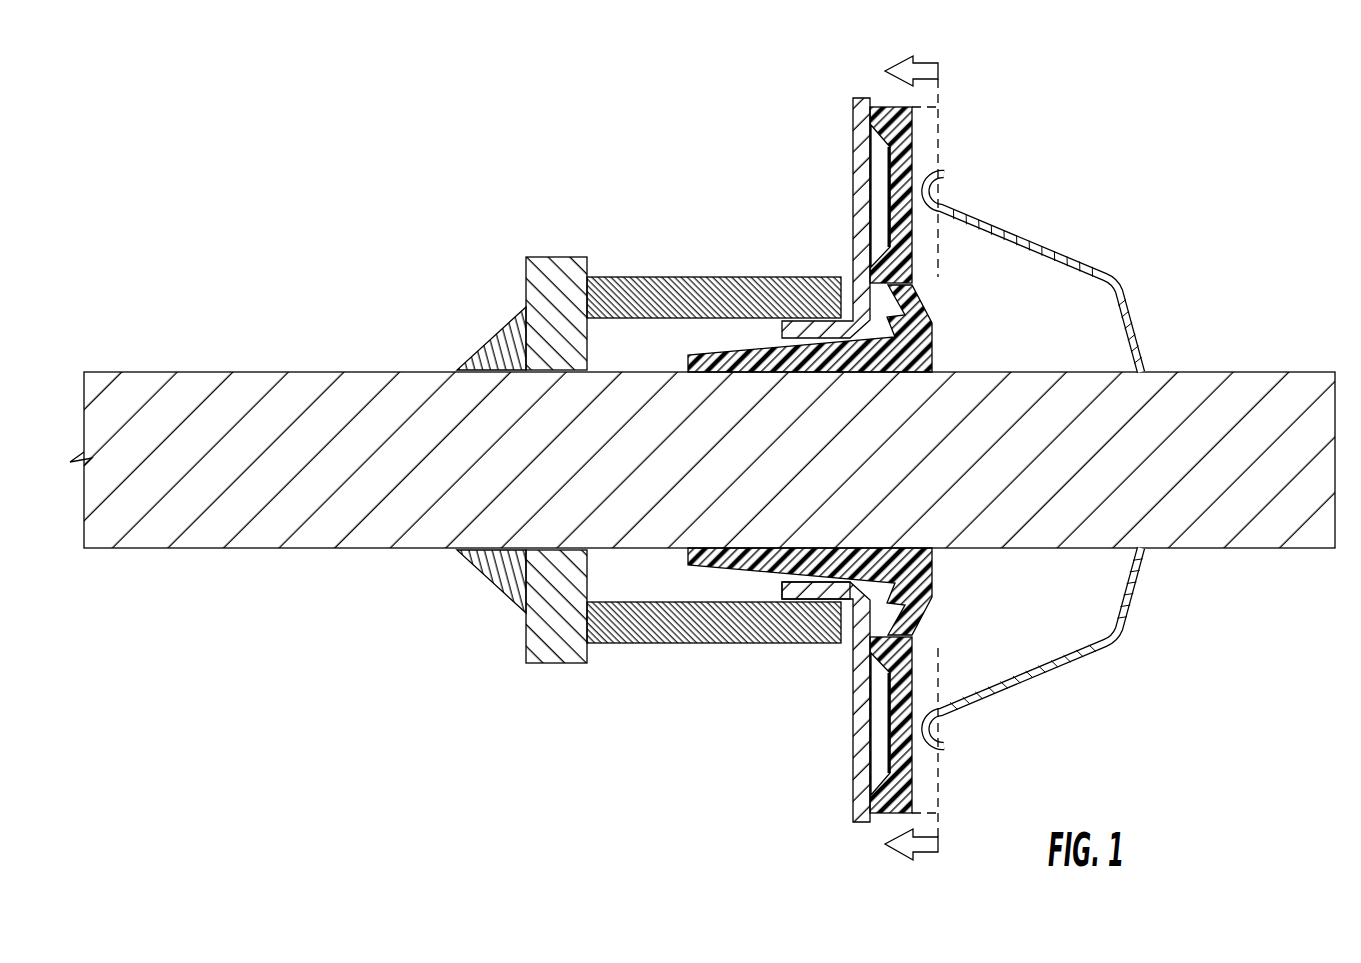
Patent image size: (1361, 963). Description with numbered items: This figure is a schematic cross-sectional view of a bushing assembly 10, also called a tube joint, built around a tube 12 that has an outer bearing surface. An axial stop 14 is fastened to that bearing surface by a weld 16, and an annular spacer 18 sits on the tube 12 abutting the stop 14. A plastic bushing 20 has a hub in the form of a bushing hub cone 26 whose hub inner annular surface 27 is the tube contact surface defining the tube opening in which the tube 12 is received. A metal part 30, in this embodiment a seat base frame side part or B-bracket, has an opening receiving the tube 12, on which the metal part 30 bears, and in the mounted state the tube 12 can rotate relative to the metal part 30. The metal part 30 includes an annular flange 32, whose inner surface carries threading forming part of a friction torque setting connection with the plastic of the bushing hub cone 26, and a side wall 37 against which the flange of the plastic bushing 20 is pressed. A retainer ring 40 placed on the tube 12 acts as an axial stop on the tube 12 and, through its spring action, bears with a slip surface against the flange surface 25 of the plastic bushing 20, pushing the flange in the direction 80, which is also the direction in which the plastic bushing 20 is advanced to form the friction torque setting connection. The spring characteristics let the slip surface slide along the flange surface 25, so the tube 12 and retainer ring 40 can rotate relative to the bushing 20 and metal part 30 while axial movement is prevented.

The bushing assembly 10 is at (708, 114).
The tube 12 is at (230, 402).
The axial stop 14 is at (544, 278).
The weld 16 is at (503, 347).
The annular spacer 18 is at (667, 287).
The plastic bushing 20 is at (902, 145).
The flange surface 25 is at (912, 790).
The bushing hub cone 26 is at (752, 560).
The hub inner annular surface 27 is at (768, 355).
The metal part 30 is at (850, 118).
The annular flange 32 is at (808, 595).
The side wall 37 is at (853, 773).
The retainer ring 40 is at (1132, 332).
The direction 80 is at (905, 58).